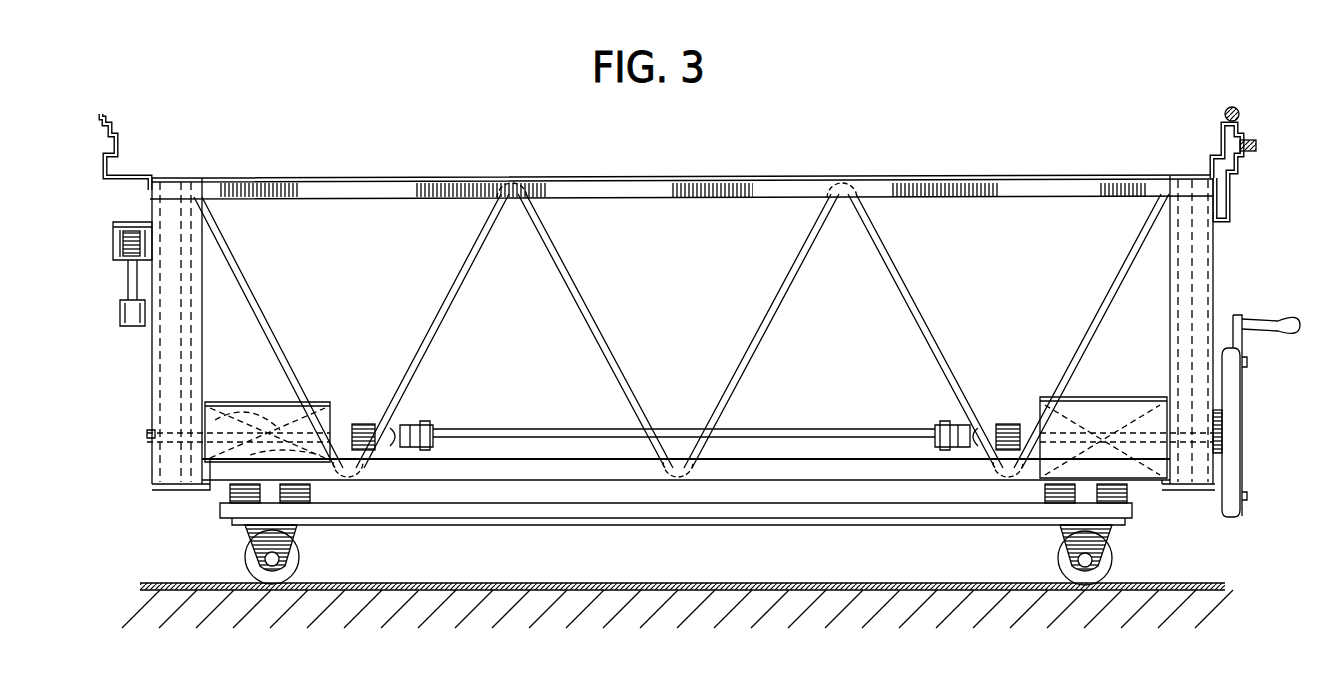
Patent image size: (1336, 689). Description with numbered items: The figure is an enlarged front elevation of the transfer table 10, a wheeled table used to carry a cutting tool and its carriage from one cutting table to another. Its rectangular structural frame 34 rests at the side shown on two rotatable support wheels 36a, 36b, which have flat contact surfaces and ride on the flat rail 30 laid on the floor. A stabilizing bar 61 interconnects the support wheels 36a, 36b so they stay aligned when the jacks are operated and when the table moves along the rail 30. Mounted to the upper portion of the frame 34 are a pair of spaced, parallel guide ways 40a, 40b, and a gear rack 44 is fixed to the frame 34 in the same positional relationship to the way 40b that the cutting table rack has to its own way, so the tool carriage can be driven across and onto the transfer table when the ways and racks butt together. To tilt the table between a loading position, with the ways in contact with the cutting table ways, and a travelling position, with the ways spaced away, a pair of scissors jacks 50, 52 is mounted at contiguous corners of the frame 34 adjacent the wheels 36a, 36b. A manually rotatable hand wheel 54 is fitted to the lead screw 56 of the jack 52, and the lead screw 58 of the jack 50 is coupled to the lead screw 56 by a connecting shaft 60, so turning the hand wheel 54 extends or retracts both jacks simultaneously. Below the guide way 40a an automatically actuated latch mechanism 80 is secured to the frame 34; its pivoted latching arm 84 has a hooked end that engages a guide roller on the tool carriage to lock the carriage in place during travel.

The transfer table 10 is at (958, 150).
The rail 30 is at (840, 583).
The structural frame 34 is at (1210, 262).
The support wheel 36a is at (246, 562).
The support wheel 36b is at (1113, 560).
The guide way 40a is at (128, 221).
The guide way 40b is at (1240, 112).
The gear rack 44 is at (1258, 147).
The scissors jack 50 is at (326, 400).
The scissors jack 52 is at (1044, 396).
The hand wheel 54 is at (1232, 386).
The lead screw 56 is at (1018, 424).
The lead screw 58 is at (362, 424).
The connecting shaft 60 is at (850, 428).
The stabilizing bar 61 is at (735, 518).
The latch mechanism 80 is at (134, 333).
The latching arm 84 is at (146, 310).